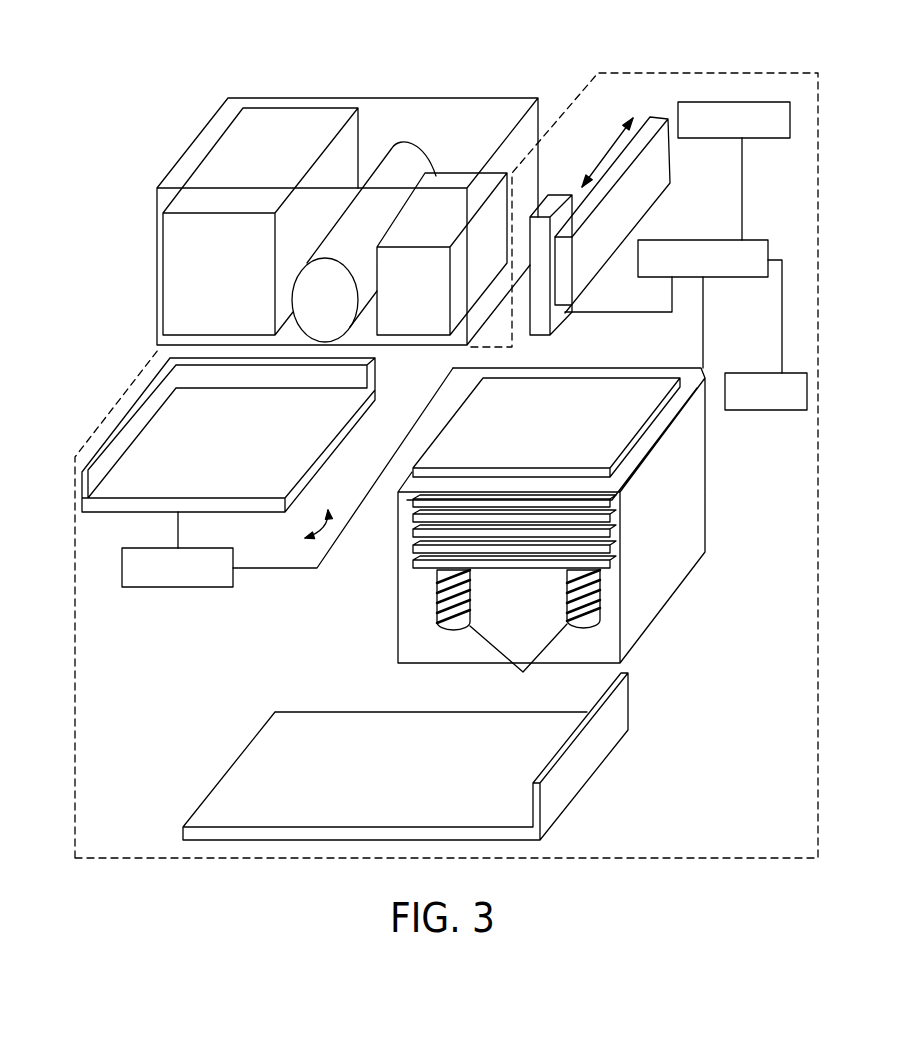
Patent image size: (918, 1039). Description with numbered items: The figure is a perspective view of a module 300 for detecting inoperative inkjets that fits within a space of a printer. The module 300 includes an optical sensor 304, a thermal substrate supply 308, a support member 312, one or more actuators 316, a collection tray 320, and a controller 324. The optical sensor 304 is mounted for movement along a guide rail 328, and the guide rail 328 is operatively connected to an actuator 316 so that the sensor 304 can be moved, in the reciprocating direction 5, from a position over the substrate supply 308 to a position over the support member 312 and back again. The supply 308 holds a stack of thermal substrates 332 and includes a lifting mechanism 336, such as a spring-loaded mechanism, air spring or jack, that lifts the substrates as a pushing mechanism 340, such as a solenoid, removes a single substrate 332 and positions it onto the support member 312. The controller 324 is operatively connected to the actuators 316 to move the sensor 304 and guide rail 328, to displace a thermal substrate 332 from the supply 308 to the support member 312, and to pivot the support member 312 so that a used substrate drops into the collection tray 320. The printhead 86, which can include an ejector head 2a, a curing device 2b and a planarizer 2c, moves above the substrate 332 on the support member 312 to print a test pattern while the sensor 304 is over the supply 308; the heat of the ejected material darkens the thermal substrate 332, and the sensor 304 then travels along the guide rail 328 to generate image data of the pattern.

The module 300 is at (213, 61).
The printhead 86 is at (497, 96).
The ejector head 2a is at (305, 112).
The curing device 2b is at (400, 170).
The planarizer 2c is at (452, 183).
The optical sensor 304 is at (563, 314).
The guide rail 328 is at (660, 198).
The direction of movement 5 is at (608, 150).
The actuators 316 is at (763, 139).
The controller 324 is at (740, 278).
The pushing mechanism 340 is at (797, 411).
The thermal substrate 332 is at (681, 379).
The thermal substrate supply 308 is at (398, 598).
The lifting mechanism 336 is at (518, 639).
The support member 312 is at (232, 513).
The collection tray 320 is at (288, 712).